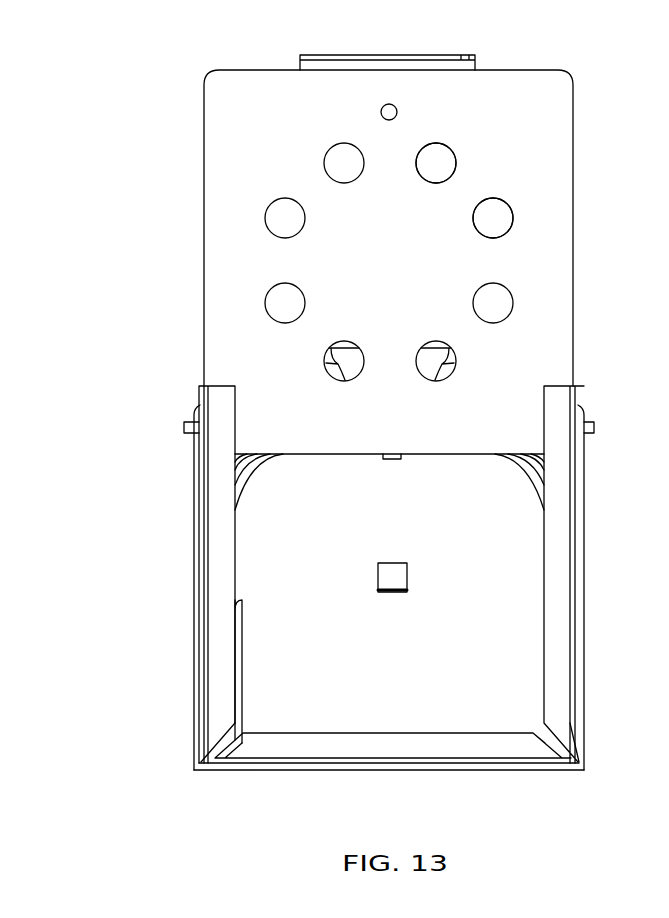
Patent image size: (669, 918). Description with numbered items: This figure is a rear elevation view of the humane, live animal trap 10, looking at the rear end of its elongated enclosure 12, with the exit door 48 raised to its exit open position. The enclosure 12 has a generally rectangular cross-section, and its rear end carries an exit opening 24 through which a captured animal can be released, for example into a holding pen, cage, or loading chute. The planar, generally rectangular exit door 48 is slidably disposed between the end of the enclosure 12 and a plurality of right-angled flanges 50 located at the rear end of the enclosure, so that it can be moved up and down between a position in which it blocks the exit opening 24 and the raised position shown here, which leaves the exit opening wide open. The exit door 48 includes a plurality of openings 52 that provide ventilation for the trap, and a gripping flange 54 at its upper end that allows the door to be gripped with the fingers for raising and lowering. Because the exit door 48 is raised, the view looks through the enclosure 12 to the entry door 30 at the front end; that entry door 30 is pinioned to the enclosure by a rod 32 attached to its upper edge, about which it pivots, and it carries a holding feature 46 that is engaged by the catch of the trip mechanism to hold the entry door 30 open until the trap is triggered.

The animal trap 10 is at (132, 140).
The enclosure 12 is at (197, 645).
The exit opening 24 is at (257, 530).
The entry door 30 is at (446, 692).
The rod 32 is at (187, 426).
The holding feature 46 is at (407, 577).
The exit door 48 is at (382, 269).
The right-angled flanges 50 is at (560, 497).
The openings 52 is at (457, 158).
The gripping flange 54 is at (463, 62).